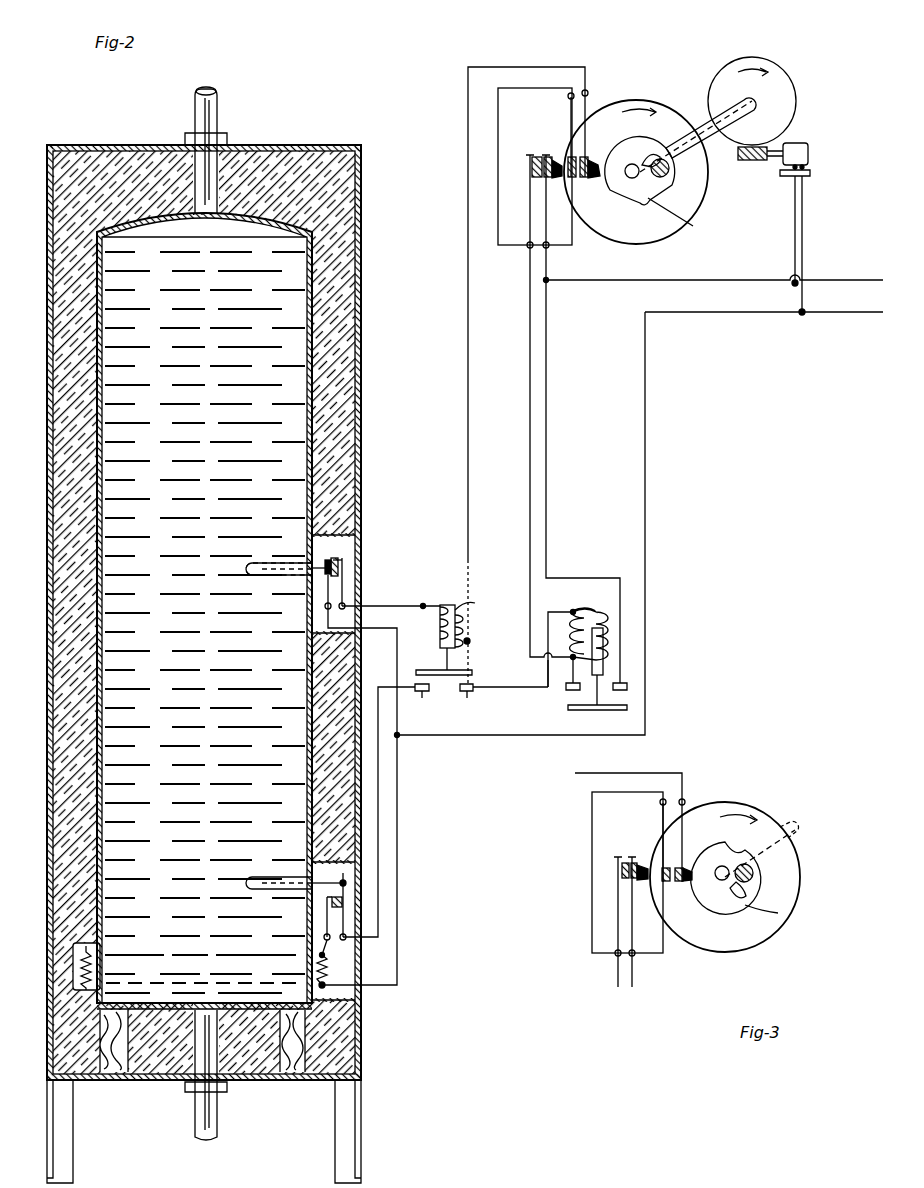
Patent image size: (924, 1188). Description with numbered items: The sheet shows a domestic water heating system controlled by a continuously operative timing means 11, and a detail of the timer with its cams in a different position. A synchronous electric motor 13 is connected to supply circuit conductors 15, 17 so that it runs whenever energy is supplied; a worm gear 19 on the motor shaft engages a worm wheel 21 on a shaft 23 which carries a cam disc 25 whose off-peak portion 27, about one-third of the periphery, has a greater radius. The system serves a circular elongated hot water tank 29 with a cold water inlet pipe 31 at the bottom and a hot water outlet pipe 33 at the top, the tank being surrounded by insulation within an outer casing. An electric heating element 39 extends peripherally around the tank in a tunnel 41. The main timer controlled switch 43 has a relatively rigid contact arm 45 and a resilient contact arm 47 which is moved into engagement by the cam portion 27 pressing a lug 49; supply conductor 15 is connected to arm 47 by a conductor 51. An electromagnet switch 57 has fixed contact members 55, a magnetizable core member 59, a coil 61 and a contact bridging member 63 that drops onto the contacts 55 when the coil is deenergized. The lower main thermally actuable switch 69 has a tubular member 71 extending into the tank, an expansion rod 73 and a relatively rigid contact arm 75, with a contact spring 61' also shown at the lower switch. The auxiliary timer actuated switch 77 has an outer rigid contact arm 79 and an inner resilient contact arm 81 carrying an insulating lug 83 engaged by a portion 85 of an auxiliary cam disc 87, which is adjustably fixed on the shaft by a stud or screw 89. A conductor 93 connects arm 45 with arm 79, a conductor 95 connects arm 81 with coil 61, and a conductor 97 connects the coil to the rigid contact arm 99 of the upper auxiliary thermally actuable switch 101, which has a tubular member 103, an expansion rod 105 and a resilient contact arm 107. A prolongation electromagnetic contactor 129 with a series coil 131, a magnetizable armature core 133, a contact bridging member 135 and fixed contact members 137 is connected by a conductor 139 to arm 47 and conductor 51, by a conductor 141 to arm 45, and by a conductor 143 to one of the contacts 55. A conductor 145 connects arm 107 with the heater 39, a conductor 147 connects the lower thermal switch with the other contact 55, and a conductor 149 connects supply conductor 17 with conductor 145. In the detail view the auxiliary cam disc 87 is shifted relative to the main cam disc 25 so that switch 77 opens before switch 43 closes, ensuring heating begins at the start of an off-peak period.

In FIG. 2, the timing means 11 is at (678, 185).
In FIG. 2, the synchronous electric motor 13 is at (800, 142).
In FIG. 2, the supply circuit conductor 15 is at (828, 283).
In FIG. 2, the supply circuit conductor 17 is at (838, 313).
In FIG. 2, the worm gear 19 is at (760, 165).
In FIG. 2, the worm wheel 21 is at (790, 82).
In FIG. 2, the shaft 23 is at (700, 120).
In FIG. 3, the shaft 23 is at (793, 826).
In FIG. 2, the cam disc 25 is at (704, 176).
In FIG. 3, the cam disc 25 is at (795, 868).
In FIG. 2, the off-peak portion 27 is at (603, 243).
In FIG. 3, the off-peak portion 27 is at (742, 952).
In FIG. 2, the hot water tank 29 is at (302, 412).
In FIG. 2, the cold water inlet pipe 31 is at (221, 1112).
In FIG. 2, the hot water outlet pipe 33 is at (221, 99).
In FIG. 2, the electric heating element 39 is at (340, 978).
In FIG. 2, the tunnel 41 is at (100, 943).
In FIG. 2, the main timer controlled switch 43 is at (529, 152).
In FIG. 3, the main timer controlled switch 43 is at (617, 855).
In FIG. 2, the rigid contact arm 45 is at (527, 190).
In FIG. 3, the rigid contact arm 45 is at (615, 922).
In FIG. 2, the resilient contact arm 47 is at (548, 210).
In FIG. 3, the resilient contact arm 47 is at (636, 930).
In FIG. 2, the lug 49 is at (551, 155).
In FIG. 3, the lug 49 is at (642, 862).
In FIG. 2, the conductor 51 is at (610, 288).
In FIG. 2, the fixed contact members 55 is at (472, 702).
In FIG. 2, the electromagnet switch 57 is at (452, 622).
In FIG. 2, the magnetizable core member 59 is at (476, 601).
In FIG. 2, the coil 61 is at (434, 626).
In FIG. 2, the contact spring 61' is at (390, 904).
In FIG. 2, the contact bridging member 63 is at (462, 668).
In FIG. 2, the main thermally actuable heater control switch 69 is at (340, 895).
In FIG. 2, the tubular member 71 is at (268, 893).
In FIG. 2, the expansion rod 73 is at (350, 880).
In FIG. 2, the rigid contact arm 75 is at (322, 922).
In FIG. 2, the auxiliary timer actuated switch 77 is at (581, 176).
In FIG. 3, the auxiliary timer actuated switch 77 is at (670, 888).
In FIG. 2, the outer rigid contact arm 79 is at (568, 110).
In FIG. 3, the outer rigid contact arm 79 is at (660, 815).
In FIG. 2, the inner resilient contact arm 81 is at (588, 105).
In FIG. 3, the inner resilient contact arm 81 is at (686, 800).
In FIG. 2, the lug 83 is at (594, 158).
In FIG. 3, the lug 83 is at (690, 884).
In FIG. 3, the cam portion 85 is at (710, 840).
In FIG. 2, the auxiliary cam disc 87 is at (686, 228).
In FIG. 3, the auxiliary cam disc 87 is at (778, 914).
In FIG. 2, the stud or screw 89 is at (668, 172).
In FIG. 3, the stud or screw 89 is at (752, 877).
In FIG. 2, the conductor 93 is at (497, 168).
In FIG. 3, the conductor 93 is at (627, 872).
In FIG. 2, the conductor 95 is at (500, 67).
In FIG. 3, the conductor 95 is at (620, 773).
In FIG. 2, the conductor 97 is at (386, 606).
In FIG. 2, the rigid contact arm 99 is at (348, 590).
In FIG. 2, the auxiliary thermally actuable switch 101 is at (322, 583).
In FIG. 2, the tubular member 103 is at (268, 580).
In FIG. 2, the expansion rod 105 is at (335, 560).
In FIG. 2, the resilient contact arm 107 is at (325, 592).
In FIG. 2, the prolongation electromagnetic contactor 129 is at (605, 654).
In FIG. 2, the coil 131 is at (610, 642).
In FIG. 2, the magnetizable armature core 133 is at (606, 668).
In FIG. 2, the contact bridging member 135 is at (624, 712).
In FIG. 2, the fixed contact members 137 is at (560, 690).
In FIG. 2, the conductor 139 is at (549, 392).
In FIG. 2, the conductor 141 is at (529, 450).
In FIG. 2, the conductor 143 is at (503, 736).
In FIG. 2, the conductor 145 is at (399, 782).
In FIG. 2, the conductor 147 is at (382, 822).
In FIG. 2, the conductor 149 is at (647, 508).